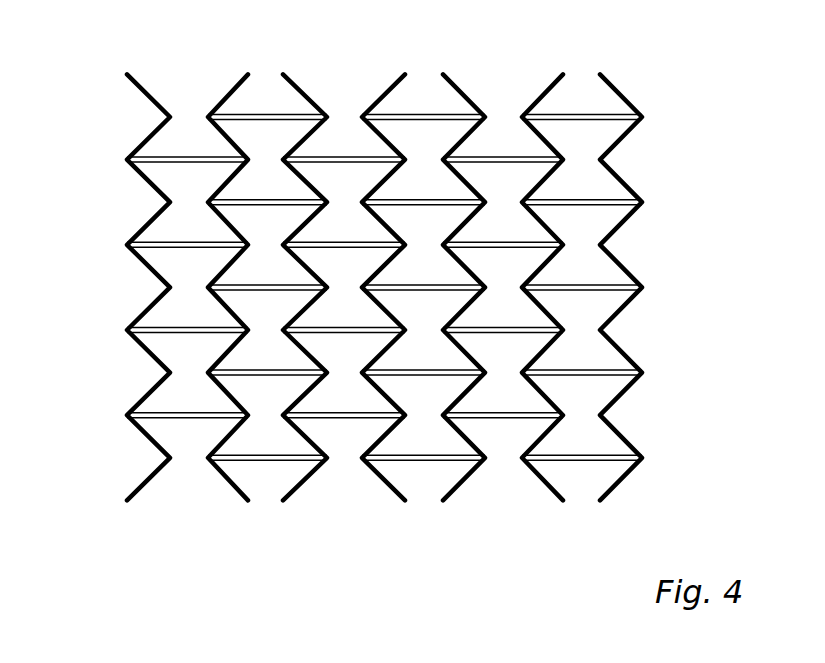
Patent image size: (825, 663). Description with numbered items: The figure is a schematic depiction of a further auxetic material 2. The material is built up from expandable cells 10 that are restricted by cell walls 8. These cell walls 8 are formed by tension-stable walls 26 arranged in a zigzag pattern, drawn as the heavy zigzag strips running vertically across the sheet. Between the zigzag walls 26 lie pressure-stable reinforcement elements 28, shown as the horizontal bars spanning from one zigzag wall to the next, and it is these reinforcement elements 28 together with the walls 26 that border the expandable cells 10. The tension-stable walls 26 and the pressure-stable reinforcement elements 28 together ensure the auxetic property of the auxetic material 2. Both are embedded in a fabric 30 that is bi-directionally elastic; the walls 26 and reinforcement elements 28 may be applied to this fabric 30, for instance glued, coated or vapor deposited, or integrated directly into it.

The auxetic material 2 is at (724, 183).
The cell walls 8 is at (263, 115).
The expandable cells 10 is at (423, 142).
The tension-stable walls 26 is at (623, 147).
The pressure-stable reinforcement elements 28 is at (583, 373).
The fabric 30 is at (653, 403).